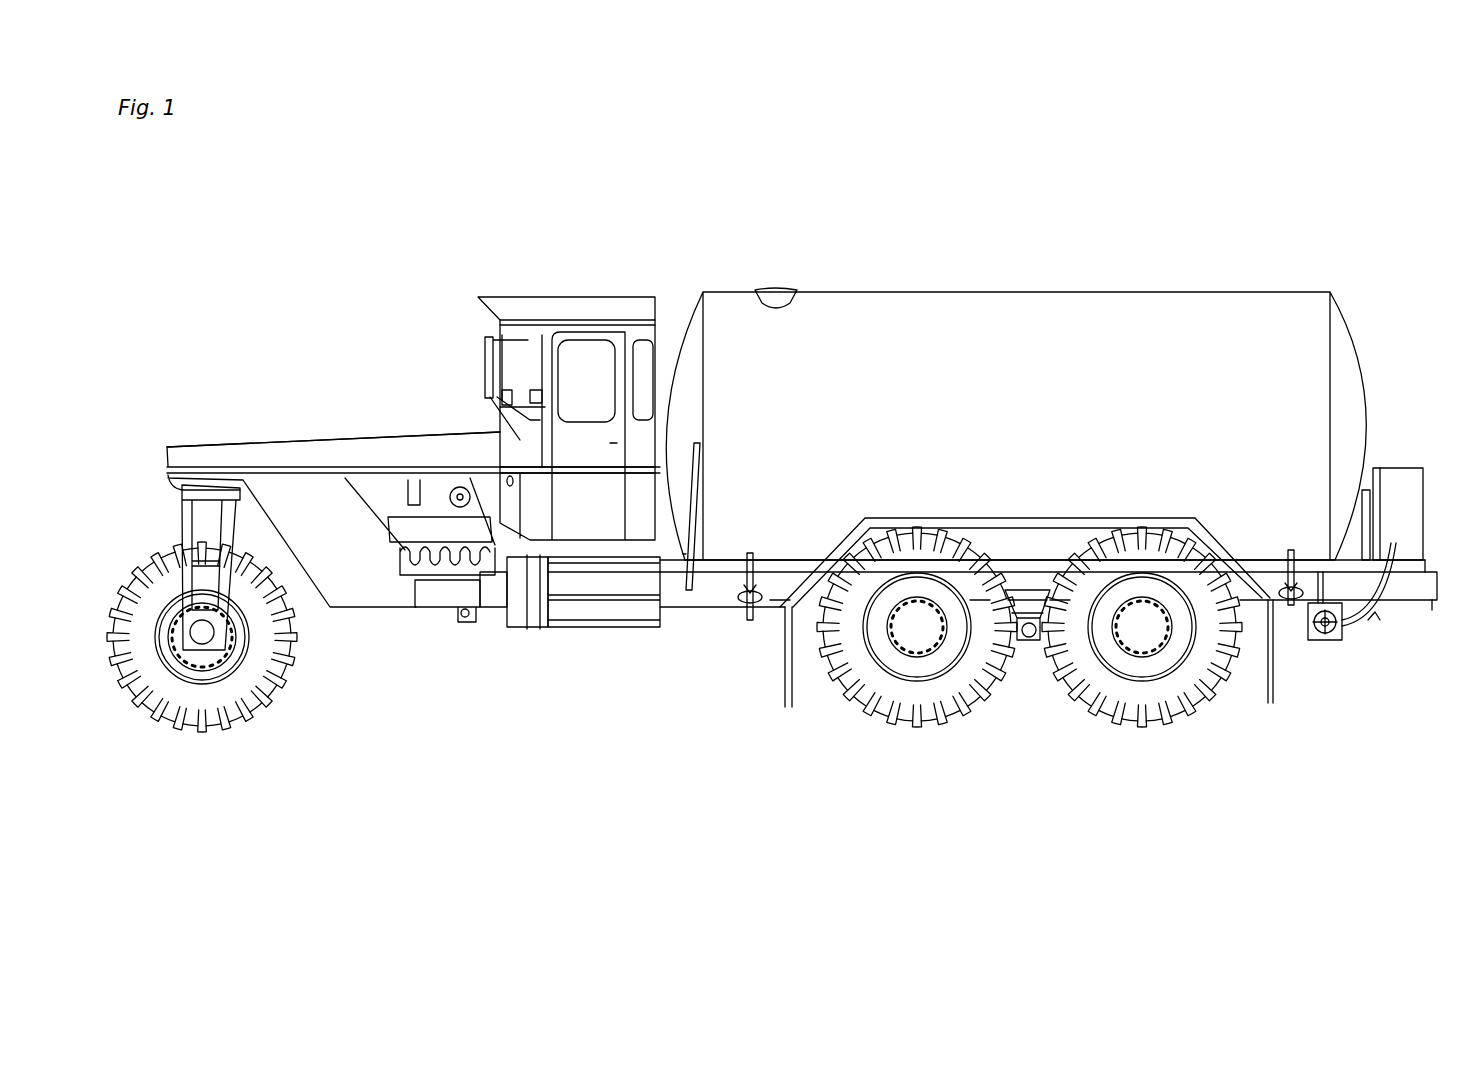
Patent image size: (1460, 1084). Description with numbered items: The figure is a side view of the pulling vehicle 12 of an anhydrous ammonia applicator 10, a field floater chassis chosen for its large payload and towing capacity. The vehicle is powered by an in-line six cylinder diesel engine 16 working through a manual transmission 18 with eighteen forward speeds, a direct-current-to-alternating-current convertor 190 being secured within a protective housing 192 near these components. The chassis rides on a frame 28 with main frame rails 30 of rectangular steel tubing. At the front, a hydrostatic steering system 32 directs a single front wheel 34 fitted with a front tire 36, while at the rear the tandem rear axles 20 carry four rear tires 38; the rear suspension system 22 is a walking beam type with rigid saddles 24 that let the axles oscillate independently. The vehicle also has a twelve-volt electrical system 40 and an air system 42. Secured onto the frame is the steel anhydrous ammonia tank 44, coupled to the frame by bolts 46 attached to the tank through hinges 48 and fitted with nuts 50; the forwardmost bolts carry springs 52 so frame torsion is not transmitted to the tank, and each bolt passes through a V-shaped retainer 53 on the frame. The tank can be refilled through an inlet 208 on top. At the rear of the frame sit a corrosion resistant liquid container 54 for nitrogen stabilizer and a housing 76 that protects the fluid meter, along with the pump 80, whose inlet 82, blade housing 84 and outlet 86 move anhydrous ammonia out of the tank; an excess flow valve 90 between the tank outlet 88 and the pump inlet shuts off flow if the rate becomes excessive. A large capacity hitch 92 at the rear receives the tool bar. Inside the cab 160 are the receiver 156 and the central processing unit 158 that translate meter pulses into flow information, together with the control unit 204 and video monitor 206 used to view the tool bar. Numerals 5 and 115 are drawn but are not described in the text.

The control unit 5 is at (1372, 490).
The anhydrous ammonia applicator 10 is at (336, 339).
The pulling vehicle 12 is at (489, 191).
The engine 16 is at (400, 552).
The transmission 18 is at (490, 608).
The tandem rear axles 20 is at (1115, 648).
The rear suspension system 22 is at (1023, 666).
The rigid saddles 24 is at (1032, 647).
The frame 28 is at (715, 631).
The main frame rails 30 is at (786, 628).
The hydrostatic steering system 32 is at (172, 488).
The front wheel 34 is at (295, 737).
The front tire 36 is at (212, 734).
The rear tires 38 is at (900, 727).
The electrical system 40 is at (445, 605).
The air system 42 is at (657, 601).
The anhydrous ammonia tank 44 is at (1066, 380).
The bolts 46 is at (1286, 582).
The hinges 48 is at (748, 556).
The nuts 50 is at (756, 616).
The springs 52 is at (760, 588).
The V-shaped retainer 53 is at (776, 598).
The liquid container 54 is at (1368, 490).
The housing 76 is at (1410, 490).
The pump 80 is at (1330, 656).
The inlet 82 is at (1315, 607).
The blade housing 84 is at (1338, 640).
The outlet 86 is at (1348, 628).
The outlet 88 is at (1321, 560).
The excess flow valve 90 is at (1290, 548).
The hitch 92 is at (1432, 608).
The valve 115 is at (1372, 618).
The receiver 156 is at (490, 380).
The central processing unit 158 is at (500, 410).
The cab 160 is at (508, 297).
The direct-current-to-alternating-current convertor 190 is at (560, 625).
The protective housing 192 is at (520, 622).
The control unit 204 is at (505, 390).
The video monitor 206 is at (540, 390).
The inlet 208 is at (798, 292).